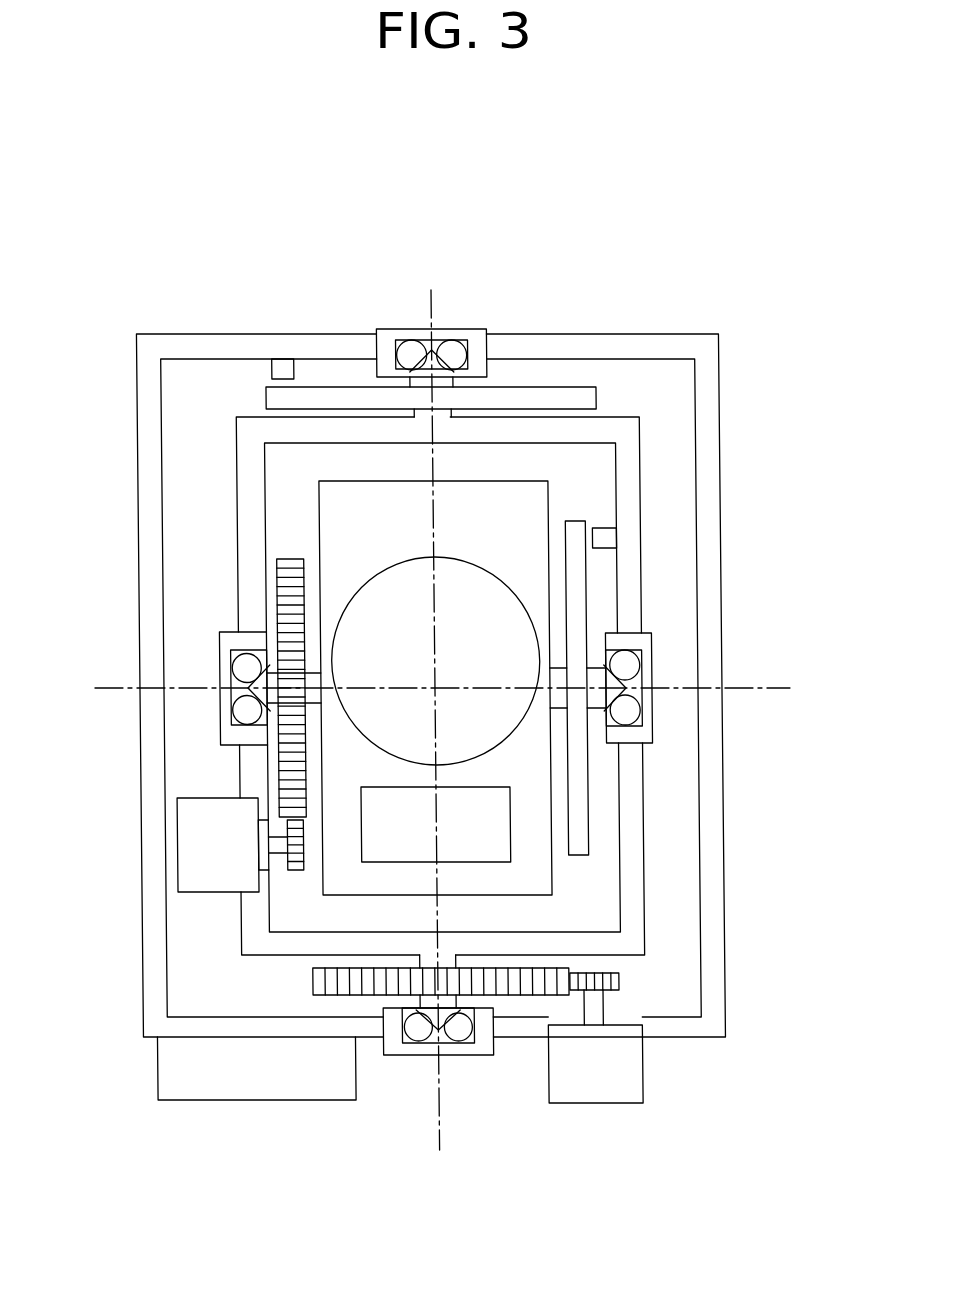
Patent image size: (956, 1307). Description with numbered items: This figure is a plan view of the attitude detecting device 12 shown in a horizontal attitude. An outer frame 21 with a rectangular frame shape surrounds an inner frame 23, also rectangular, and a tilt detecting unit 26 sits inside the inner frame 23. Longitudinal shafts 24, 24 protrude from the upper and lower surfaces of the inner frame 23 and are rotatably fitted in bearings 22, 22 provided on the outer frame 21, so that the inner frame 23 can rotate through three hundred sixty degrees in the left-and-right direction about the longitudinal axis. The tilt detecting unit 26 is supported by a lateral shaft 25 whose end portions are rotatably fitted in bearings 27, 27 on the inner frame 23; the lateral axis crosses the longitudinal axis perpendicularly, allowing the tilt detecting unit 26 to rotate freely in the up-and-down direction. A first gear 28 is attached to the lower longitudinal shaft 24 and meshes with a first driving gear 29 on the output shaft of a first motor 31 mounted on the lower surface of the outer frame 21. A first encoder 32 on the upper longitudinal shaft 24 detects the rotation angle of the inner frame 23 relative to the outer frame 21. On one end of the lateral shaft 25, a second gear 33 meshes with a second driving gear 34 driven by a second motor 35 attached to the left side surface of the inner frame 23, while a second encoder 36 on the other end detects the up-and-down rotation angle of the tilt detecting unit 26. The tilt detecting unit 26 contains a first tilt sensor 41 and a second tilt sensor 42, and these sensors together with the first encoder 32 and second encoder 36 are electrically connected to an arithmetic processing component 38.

The attitude detecting device 12 is at (147, 243).
The outer frame 21 is at (653, 334).
The bearing 22 is at (477, 328).
The inner frame 23 is at (625, 417).
The longitudinal shaft 24 is at (452, 382).
The lateral shaft 25 is at (592, 667).
The tilt detecting unit 26 is at (555, 494).
The bearing 27 is at (220, 642).
The first gear 28 is at (310, 982).
The first driving gear 29 is at (618, 980).
The first motor 31 is at (641, 1073).
The first encoder 32 is at (308, 367).
The second gear 33 is at (287, 558).
The second driving gear 34 is at (294, 873).
The second motor 35 is at (178, 873).
The second encoder 36 is at (604, 524).
The arithmetic processing component 38 is at (247, 1100).
The first tilt sensor 41 is at (465, 559).
The second tilt sensor 42 is at (473, 787).